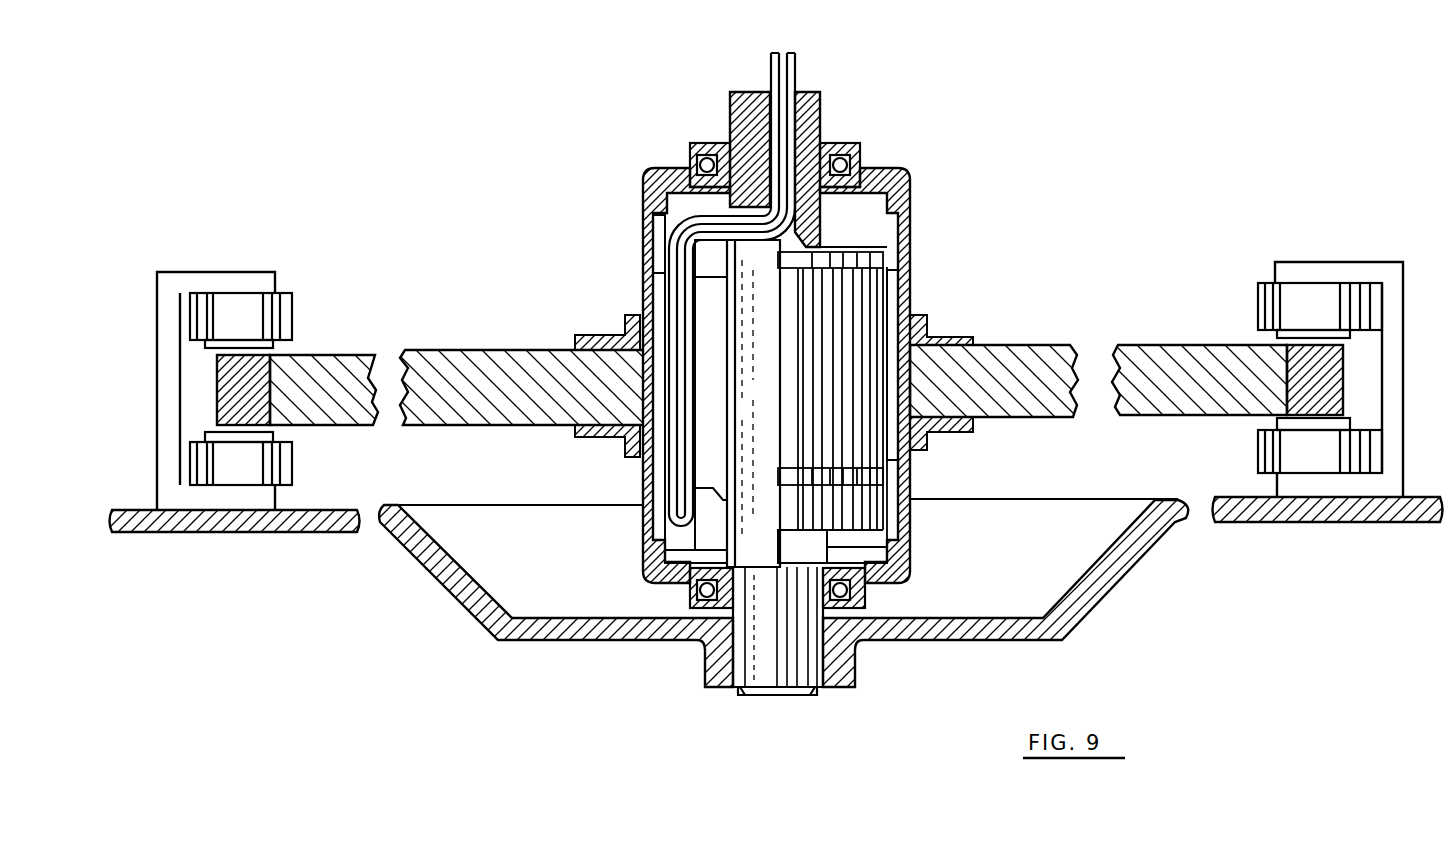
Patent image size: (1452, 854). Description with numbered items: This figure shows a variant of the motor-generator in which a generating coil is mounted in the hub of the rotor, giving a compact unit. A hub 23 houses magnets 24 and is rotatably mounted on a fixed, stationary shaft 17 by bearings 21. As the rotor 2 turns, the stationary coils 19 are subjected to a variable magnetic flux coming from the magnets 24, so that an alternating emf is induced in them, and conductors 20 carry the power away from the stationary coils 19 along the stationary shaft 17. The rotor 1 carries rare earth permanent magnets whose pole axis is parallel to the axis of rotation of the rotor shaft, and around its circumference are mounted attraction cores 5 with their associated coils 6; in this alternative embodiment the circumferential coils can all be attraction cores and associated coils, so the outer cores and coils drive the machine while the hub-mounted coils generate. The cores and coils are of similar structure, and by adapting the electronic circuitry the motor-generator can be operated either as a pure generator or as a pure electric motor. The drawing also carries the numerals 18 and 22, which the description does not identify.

The rotor 1 is at (493, 352).
The rotor 2 is at (245, 375).
The attraction core 5 is at (218, 272).
The attraction coil 6 is at (265, 307).
The fixed shaft 17 is at (781, 608).
The coil former 18 is at (703, 457).
The stationary coil 19 is at (677, 523).
The conductor 20 is at (795, 70).
The bearing 21 is at (710, 607).
The base plate 22 is at (912, 572).
The hub 23 is at (912, 298).
The magnet 24 is at (893, 277).